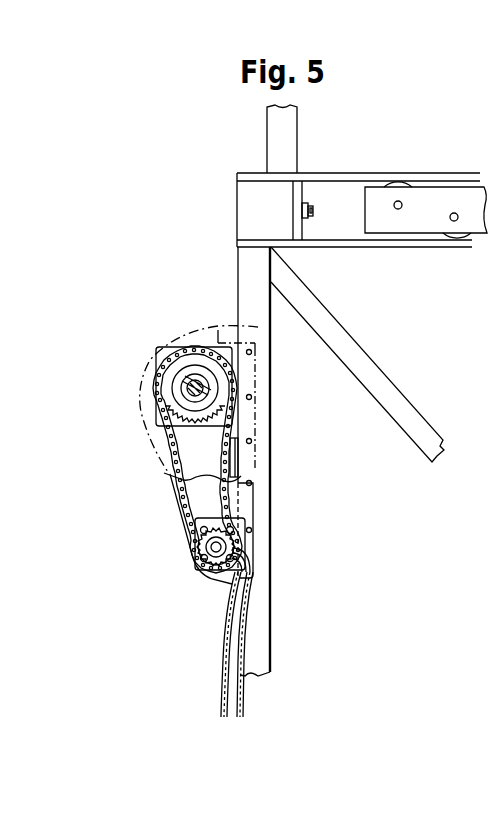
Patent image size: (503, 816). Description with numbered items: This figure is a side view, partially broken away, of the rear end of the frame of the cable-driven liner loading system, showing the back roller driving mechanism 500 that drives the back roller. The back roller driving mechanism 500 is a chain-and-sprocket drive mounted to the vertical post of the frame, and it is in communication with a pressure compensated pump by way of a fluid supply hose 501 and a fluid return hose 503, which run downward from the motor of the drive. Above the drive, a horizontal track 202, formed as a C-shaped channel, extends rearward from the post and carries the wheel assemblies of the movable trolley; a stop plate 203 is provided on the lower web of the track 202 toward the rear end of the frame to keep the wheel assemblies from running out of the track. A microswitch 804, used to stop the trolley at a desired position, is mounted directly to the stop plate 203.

The microswitch 804 is at (313, 207).
The stop plate 203 is at (298, 227).
The track 202 is at (352, 227).
The back roller driving mechanism 500 is at (173, 498).
The fluid return hose 503 is at (229, 610).
The fluid supply hose 501 is at (243, 695).